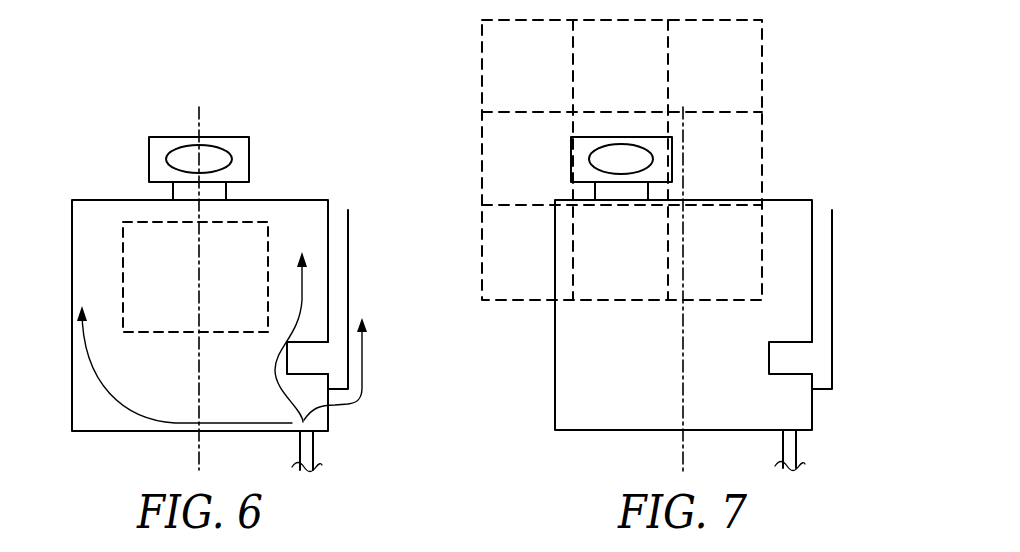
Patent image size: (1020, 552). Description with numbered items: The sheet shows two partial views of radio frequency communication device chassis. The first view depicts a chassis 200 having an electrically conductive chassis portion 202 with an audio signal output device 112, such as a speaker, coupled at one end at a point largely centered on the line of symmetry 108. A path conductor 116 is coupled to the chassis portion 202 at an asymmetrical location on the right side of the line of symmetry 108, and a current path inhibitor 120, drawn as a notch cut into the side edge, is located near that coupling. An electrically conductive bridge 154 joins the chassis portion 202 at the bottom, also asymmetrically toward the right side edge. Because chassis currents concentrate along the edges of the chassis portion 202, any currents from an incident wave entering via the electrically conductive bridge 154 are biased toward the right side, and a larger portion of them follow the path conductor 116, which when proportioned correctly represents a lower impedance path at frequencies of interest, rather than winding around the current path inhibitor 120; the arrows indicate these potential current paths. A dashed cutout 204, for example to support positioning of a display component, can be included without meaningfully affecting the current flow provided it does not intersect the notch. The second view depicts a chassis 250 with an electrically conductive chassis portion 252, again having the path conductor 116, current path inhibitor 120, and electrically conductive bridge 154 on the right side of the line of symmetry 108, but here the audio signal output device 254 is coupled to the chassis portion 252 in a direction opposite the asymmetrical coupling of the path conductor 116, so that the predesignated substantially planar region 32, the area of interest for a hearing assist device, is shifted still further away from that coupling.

In FIG. 6, the chassis 200 is at (302, 145).
In FIG. 6, the electrically conductive chassis portion 202 is at (87, 228).
In FIG. 6, the cutout 204 is at (250, 250).
In FIG. 6, the audio signal output device 112 is at (155, 160).
In FIG. 6, the path conductor 116 is at (350, 270).
In FIG. 7, the path conductor 116 is at (835, 262).
In FIG. 6, the current path inhibitor 120 is at (338, 356).
In FIG. 7, the current path inhibitor 120 is at (813, 356).
In FIG. 6, the line of symmetry 108 is at (199, 454).
In FIG. 7, the line of symmetry 108 is at (683, 454).
In FIG. 6, the electrically conductive bridge 154 is at (310, 448).
In FIG. 7, the electrically conductive bridge 154 is at (797, 448).
In FIG. 7, the chassis 250 is at (814, 88).
In FIG. 7, the electrically conductive chassis portion 252 is at (568, 364).
In FIG. 7, the audio signal output device 254 is at (590, 158).
In FIG. 7, the predesignated substantially planar region 32 is at (748, 68).